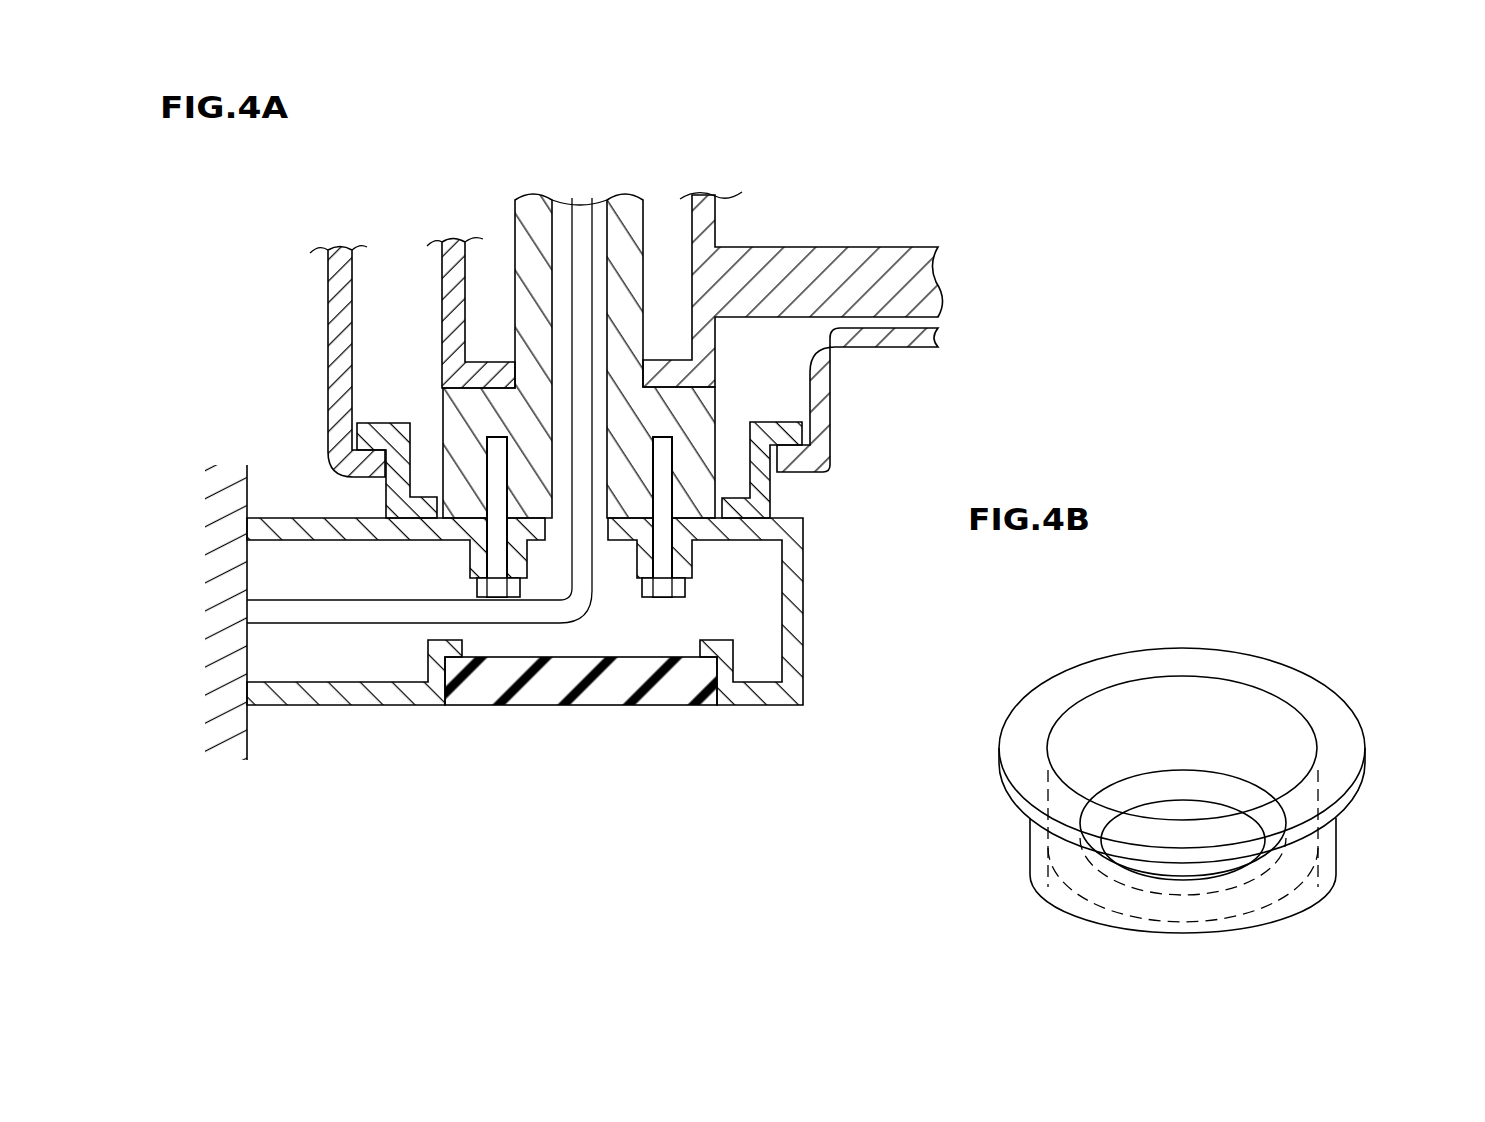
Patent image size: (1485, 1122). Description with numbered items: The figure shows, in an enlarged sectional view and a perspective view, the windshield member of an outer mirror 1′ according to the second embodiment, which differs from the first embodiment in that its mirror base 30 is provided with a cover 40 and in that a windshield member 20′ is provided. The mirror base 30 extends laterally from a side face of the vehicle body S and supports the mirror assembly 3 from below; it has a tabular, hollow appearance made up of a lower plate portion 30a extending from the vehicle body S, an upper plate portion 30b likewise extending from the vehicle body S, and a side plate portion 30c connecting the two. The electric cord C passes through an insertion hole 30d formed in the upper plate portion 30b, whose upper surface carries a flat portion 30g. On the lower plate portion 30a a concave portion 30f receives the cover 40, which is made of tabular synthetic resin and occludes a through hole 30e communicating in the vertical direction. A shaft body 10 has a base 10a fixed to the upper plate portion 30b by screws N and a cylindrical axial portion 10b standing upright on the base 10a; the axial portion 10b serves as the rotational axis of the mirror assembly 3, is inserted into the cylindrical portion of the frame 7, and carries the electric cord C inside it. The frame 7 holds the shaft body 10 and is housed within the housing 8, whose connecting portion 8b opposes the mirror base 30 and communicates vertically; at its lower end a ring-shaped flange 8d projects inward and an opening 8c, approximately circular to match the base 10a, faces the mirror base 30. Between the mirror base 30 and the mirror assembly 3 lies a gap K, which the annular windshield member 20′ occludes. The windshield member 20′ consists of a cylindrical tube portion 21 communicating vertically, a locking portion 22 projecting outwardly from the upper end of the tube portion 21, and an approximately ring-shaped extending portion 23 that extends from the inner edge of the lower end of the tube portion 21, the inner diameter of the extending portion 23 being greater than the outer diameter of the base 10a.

In FIG. 4A, the outer mirror 1′ is at (792, 186).
In FIG. 4A, the mirror assembly 3 is at (955, 286).
In FIG. 4A, the frame 7 is at (853, 247).
In FIG. 4A, the housing 8 is at (327, 262).
In FIG. 4A, the connecting portion 8b is at (845, 375).
In FIG. 4A, the opening 8c is at (802, 430).
In FIG. 4A, the flange 8d is at (792, 472).
In FIG. 4A, the shaft body 10 is at (483, 316).
In FIG. 4A, the base 10a is at (443, 413).
In FIG. 4A, the axial portion 10b is at (645, 272).
In FIG. 4A, the windshield member 20′ is at (343, 421).
In FIG. 4B, the windshield member 20′ is at (1212, 753).
In FIG. 4A, the tube portion 21 is at (387, 490).
In FIG. 4B, the tube portion 21 is at (1323, 847).
In FIG. 4A, the locking portion 22 is at (359, 423).
In FIG. 4B, the locking portion 22 is at (1323, 703).
In FIG. 4A, the extending portion 23 is at (430, 497).
In FIG. 4B, the extending portion 23 is at (1262, 880).
In FIG. 4A, the mirror base 30 is at (577, 643).
In FIG. 4A, the lower plate portion 30a is at (753, 706).
In FIG. 4A, the upper plate portion 30b is at (752, 541).
In FIG. 4A, the side plate portion 30c is at (803, 632).
In FIG. 4A, the insertion hole 30d is at (607, 542).
In FIG. 4A, the through hole 30e is at (700, 645).
In FIG. 4A, the concave portion 30f is at (462, 675).
In FIG. 4A, the flat portion 30g is at (692, 505).
In FIG. 4A, the cover 40 is at (602, 694).
In FIG. 4A, the electric cord C is at (283, 624).
In FIG. 4A, the screws N is at (478, 588).
In FIG. 4A, the vehicle body S is at (248, 475).
In FIG. 4A, the gap K is at (800, 505).